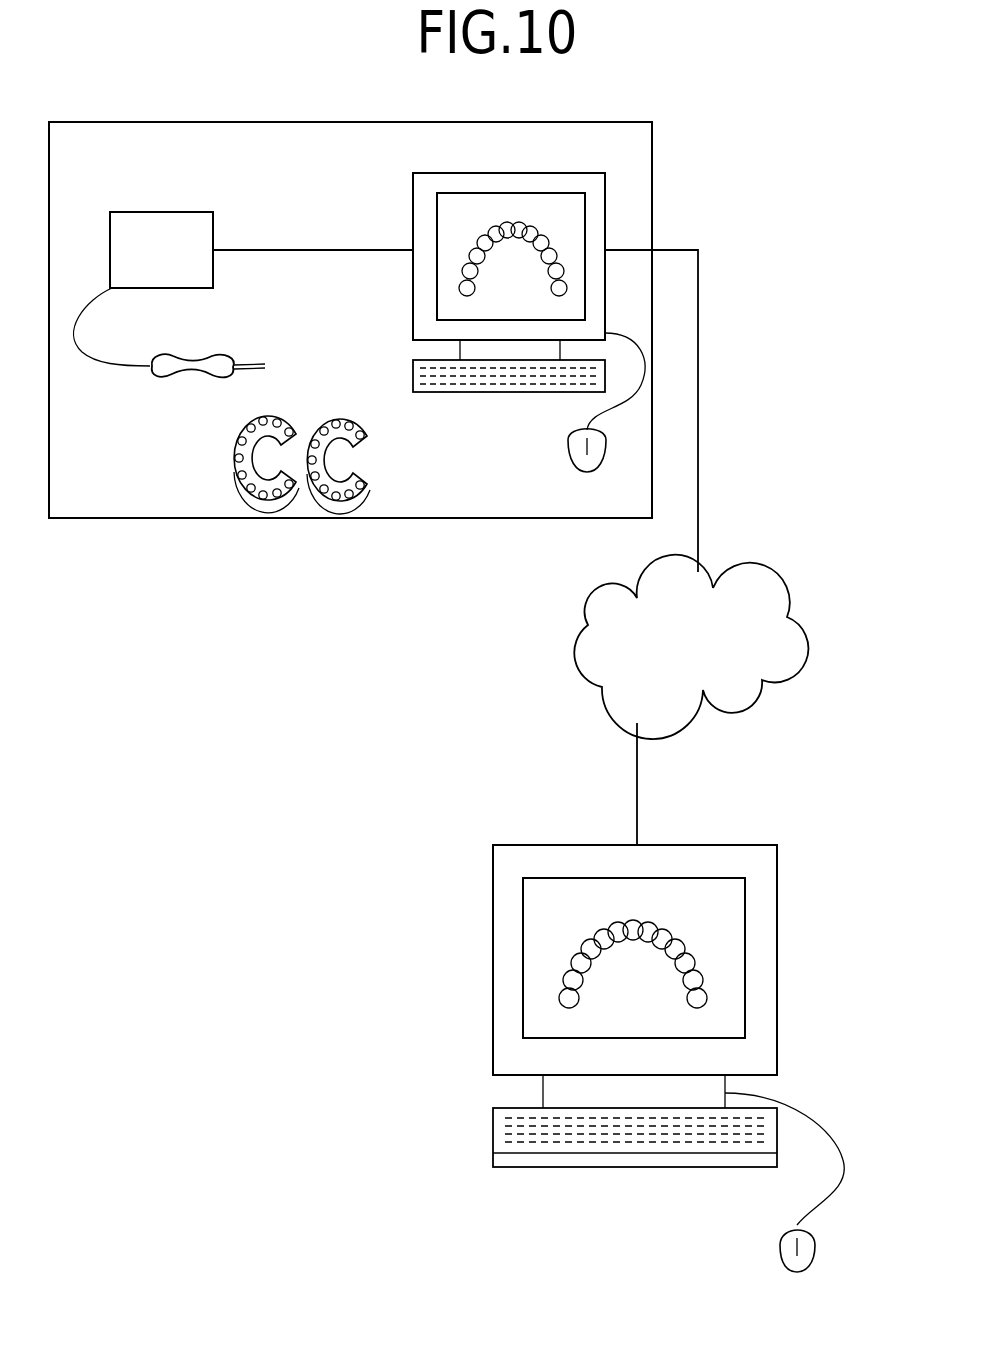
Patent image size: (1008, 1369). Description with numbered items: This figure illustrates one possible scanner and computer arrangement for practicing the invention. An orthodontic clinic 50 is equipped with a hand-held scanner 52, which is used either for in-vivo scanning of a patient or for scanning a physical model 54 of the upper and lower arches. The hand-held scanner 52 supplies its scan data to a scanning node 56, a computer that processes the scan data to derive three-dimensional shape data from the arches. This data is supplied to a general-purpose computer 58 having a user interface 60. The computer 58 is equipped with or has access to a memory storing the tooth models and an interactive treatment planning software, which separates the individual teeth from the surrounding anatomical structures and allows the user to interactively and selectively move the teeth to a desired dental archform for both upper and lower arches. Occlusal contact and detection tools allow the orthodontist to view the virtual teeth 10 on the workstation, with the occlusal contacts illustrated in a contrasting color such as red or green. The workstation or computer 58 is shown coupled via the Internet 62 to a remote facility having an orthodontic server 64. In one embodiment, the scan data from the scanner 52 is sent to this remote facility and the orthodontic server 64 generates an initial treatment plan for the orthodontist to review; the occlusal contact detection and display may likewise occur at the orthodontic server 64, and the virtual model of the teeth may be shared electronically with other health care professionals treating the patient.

The virtual teeth 10 is at (495, 232).
The orthodontic clinic 50 is at (326, 92).
The hand-held scanner 52 is at (182, 378).
The physical model 54 is at (300, 504).
The scanning node 56 is at (200, 212).
The general-purpose computer 58 is at (533, 403).
The user interface 60 is at (608, 187).
The Internet 62 is at (778, 592).
The orthodontic server 64 is at (792, 860).